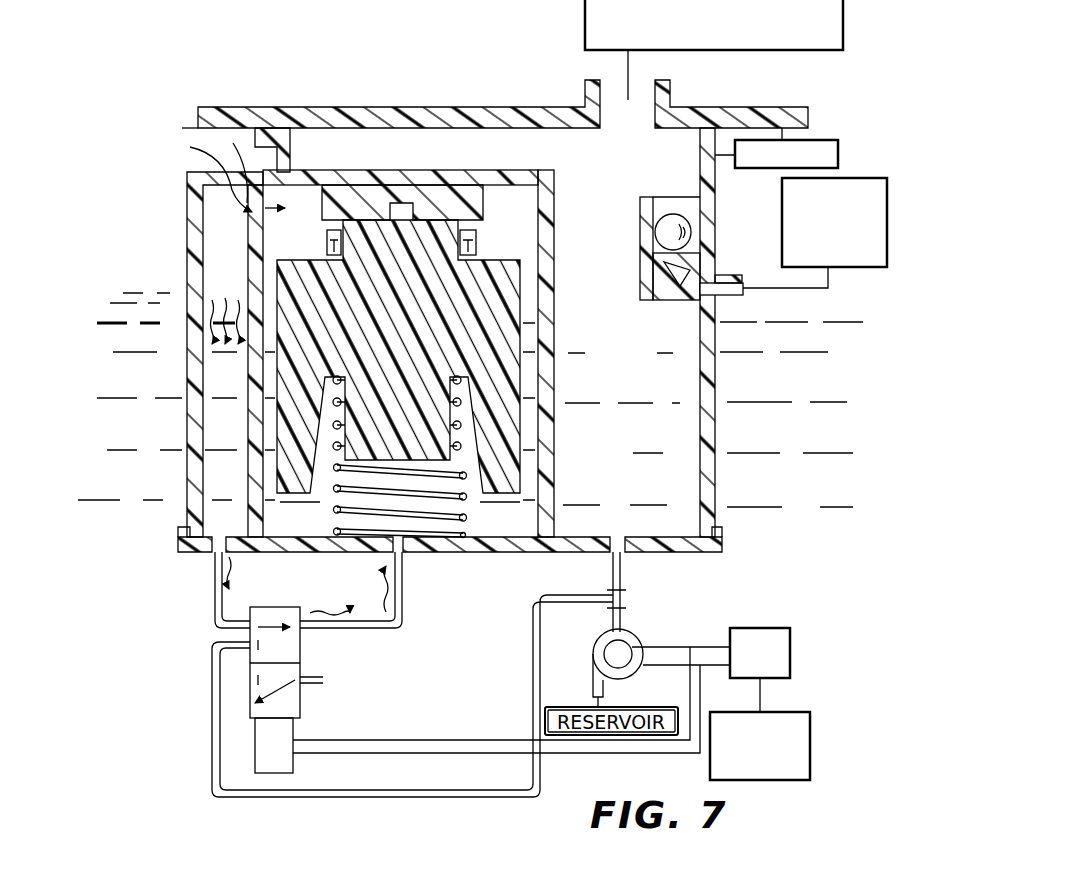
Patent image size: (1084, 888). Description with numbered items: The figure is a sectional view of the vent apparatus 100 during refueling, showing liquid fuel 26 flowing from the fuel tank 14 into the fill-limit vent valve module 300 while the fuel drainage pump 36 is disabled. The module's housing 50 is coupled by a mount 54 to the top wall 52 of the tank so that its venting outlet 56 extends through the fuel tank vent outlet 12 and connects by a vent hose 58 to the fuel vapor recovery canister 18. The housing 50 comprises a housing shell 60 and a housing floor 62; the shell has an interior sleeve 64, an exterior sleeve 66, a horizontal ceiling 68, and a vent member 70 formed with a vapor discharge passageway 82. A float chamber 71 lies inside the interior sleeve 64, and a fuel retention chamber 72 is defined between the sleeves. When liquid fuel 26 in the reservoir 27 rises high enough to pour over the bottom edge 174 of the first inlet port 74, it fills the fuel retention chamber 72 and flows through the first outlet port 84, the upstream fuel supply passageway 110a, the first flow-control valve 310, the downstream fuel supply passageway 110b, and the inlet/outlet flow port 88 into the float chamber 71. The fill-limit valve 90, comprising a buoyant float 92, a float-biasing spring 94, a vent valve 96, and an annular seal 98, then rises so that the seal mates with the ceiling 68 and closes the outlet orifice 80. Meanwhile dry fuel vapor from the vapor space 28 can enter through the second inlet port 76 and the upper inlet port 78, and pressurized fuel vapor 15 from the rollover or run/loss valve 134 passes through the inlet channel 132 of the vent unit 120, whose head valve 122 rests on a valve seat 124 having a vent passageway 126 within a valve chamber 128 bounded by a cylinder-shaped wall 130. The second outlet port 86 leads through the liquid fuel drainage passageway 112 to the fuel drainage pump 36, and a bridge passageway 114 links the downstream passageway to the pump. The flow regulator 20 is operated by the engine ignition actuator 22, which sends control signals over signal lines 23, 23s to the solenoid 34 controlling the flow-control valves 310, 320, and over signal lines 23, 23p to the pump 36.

The vent apparatus 100 is at (103, 118).
The vapor space 28 is at (138, 148).
The vent member 70 is at (257, 128).
The vapor discharge passageway 82 is at (417, 157).
The fuel tank 14 is at (453, 100).
The fuel vapor recovery canister 18 is at (585, 23).
The fuel tank vent outlet 12 is at (613, 100).
The vent hose 58 is at (633, 63).
The venting outlet 56 is at (672, 100).
The top wall 52 is at (760, 112).
The mount 54 is at (840, 153).
The rollover or run/loss valve 134 is at (853, 182).
The pressurized fuel vapor 15 is at (686, 188).
The valve chamber 128 is at (663, 207).
The cylinder-shaped wall 130 is at (640, 208).
The vent unit 120 is at (722, 210).
The head valve 122 is at (691, 229).
The inlet channel 132 is at (720, 277).
The valve seat 124 is at (672, 266).
The vent passageway 126 is at (663, 293).
The liquid fuel 26 is at (107, 293).
The reservoir 27 is at (120, 257).
The fuel retention chamber 72 is at (218, 227).
The first inlet port 74 is at (237, 250).
The second inlet port 76 is at (230, 172).
The upper inlet port 78 is at (263, 180).
The horizontal ceiling 68 is at (323, 173).
The outlet orifice 80 is at (447, 173).
The annular seal 98 is at (488, 190).
The float chamber 71 is at (522, 237).
The fill-limit valve 90 is at (488, 242).
The buoyant float 92 is at (485, 287).
The vent valve 96 is at (325, 240).
The bottom edge 174 is at (193, 305).
The interior sleeve 64 is at (250, 432).
The housing shell 60 is at (182, 483).
The exterior sleeve 66 is at (188, 493).
The first outlet port 84 is at (217, 543).
The float-biasing spring 94 is at (345, 510).
The second outlet port 86 is at (617, 543).
The housing 50 is at (727, 395).
The fill-limit vent valve module 300 is at (732, 437).
The inlet/outlet flow port 88 is at (410, 557).
The housing floor 62 is at (498, 553).
The upstream fuel supply passageway 110a is at (212, 602).
The downstream fuel supply passageway 110b is at (402, 608).
The first flow-control valve 310 is at (275, 607).
The second flow-control valve 320 is at (300, 704).
The solenoid 34 is at (282, 760).
The flow regulator 20 is at (200, 717).
The signal line 23s is at (430, 736).
The liquid fuel drainage passageway 112 is at (621, 568).
The fuel drainage pump 36 is at (638, 628).
The signal line 23 is at (706, 636).
The signal line 23p is at (678, 672).
The engine ignition actuator 22 is at (808, 708).
The bridge passageway 114 is at (440, 800).